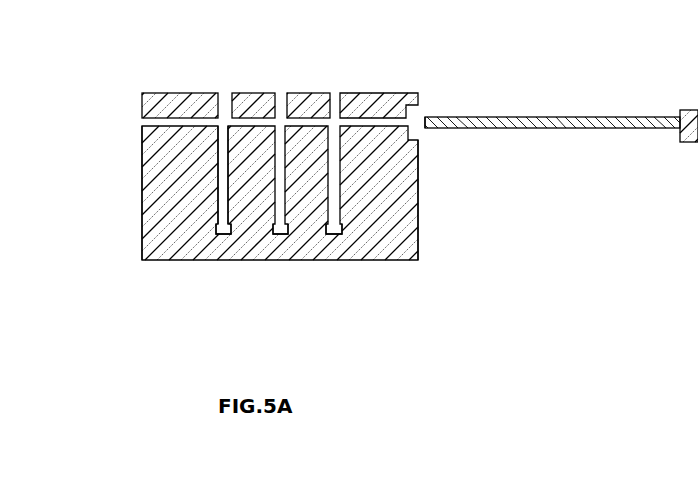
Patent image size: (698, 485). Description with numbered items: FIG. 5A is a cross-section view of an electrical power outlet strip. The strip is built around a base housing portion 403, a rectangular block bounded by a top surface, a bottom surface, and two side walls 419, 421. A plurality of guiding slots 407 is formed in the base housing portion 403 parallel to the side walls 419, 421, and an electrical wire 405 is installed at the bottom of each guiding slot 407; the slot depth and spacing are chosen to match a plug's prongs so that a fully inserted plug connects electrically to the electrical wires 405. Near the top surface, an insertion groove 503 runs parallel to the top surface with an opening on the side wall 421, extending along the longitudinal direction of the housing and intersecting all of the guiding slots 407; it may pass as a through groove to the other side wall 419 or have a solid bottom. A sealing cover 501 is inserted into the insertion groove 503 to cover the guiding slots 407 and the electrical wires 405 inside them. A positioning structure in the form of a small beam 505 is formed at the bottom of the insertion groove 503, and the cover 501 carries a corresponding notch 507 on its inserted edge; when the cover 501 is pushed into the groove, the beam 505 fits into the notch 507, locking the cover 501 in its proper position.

The base housing portion 403 is at (410, 239).
The electrical wire 405 is at (212, 242).
The guiding slot 407 is at (225, 133).
The side wall 419 is at (133, 197).
The side wall 421 is at (427, 182).
The cover 501 is at (672, 109).
The insertion groove 503 is at (366, 116).
The small beam 505 is at (138, 112).
The notch 507 is at (432, 128).